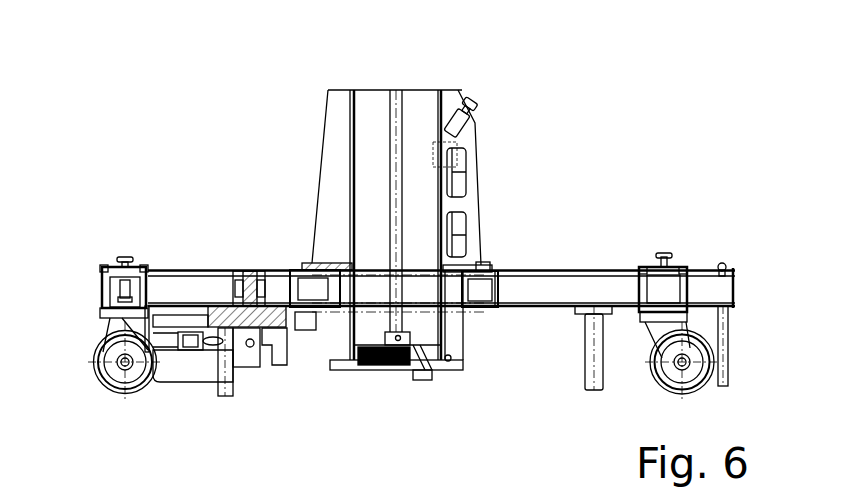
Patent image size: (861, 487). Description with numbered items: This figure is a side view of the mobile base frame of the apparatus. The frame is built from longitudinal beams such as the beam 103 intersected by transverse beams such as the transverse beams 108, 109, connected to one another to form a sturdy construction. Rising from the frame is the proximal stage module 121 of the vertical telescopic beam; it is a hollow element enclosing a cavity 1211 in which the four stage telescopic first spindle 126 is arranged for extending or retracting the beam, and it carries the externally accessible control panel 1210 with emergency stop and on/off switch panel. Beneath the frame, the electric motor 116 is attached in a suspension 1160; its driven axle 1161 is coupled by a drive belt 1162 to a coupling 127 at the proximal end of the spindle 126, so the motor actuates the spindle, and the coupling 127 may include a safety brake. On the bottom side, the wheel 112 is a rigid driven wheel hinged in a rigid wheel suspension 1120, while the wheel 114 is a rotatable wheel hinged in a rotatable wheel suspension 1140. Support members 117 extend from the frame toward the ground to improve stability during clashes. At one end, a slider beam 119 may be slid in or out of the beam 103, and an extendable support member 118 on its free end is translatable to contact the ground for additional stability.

The cavity 1211 is at (373, 86).
The first spindle 126 is at (398, 112).
The proximal stage module 121 is at (465, 100).
The control panel 1210 is at (470, 140).
The transverse beam 109 is at (482, 262).
The beam 103 is at (597, 282).
The slider beam 119 is at (723, 263).
The extendable support member 118 is at (730, 325).
The wheel 114 is at (705, 375).
The rotatable wheel suspension 1140 is at (648, 340).
The support member 117 is at (225, 396).
The coupling 127 is at (428, 382).
The drive belt 1162 is at (372, 368).
The driven axle 1161 is at (286, 370).
The electric motor 116 is at (250, 348).
The wheel 112 is at (130, 380).
The rigid wheel suspension 1120 is at (98, 340).
The suspension 1160 is at (243, 270).
The transverse beam 108 is at (296, 270).